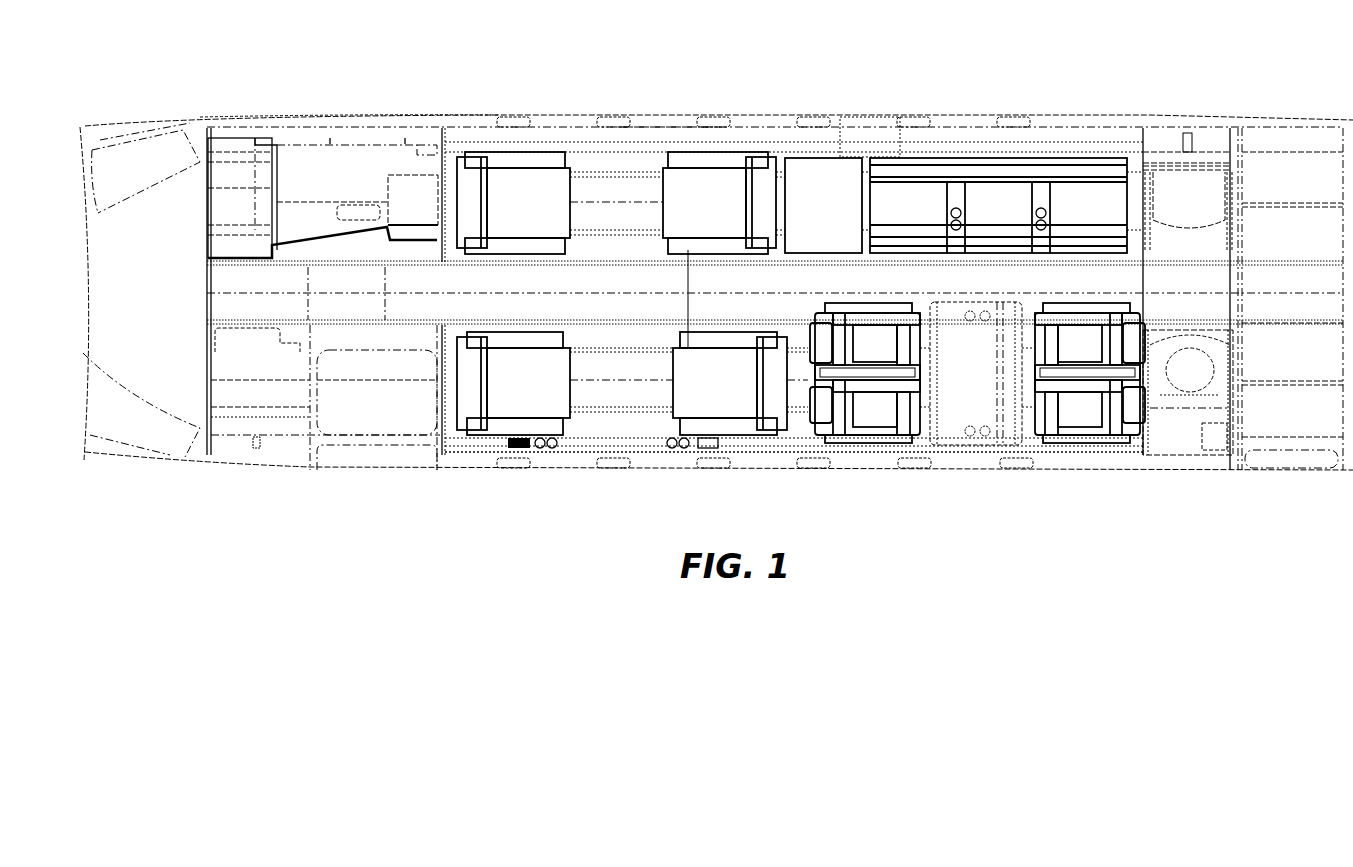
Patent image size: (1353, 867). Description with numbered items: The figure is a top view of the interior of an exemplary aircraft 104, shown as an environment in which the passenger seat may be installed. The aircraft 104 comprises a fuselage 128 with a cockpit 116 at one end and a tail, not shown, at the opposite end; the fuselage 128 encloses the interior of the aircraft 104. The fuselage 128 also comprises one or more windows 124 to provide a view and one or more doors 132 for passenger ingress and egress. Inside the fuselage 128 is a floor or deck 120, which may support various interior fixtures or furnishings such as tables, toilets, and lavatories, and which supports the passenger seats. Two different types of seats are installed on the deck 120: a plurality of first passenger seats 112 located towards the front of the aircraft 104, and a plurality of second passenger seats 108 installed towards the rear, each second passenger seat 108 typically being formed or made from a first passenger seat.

The aircraft 104 is at (677, 78).
The second passenger seat 108 is at (1102, 158).
The first passenger seat 112 is at (545, 150).
The cockpit 116 is at (129, 140).
The deck 120 is at (232, 298).
The window 124 is at (613, 112).
The fuselage 128 is at (260, 118).
The door 132 is at (840, 117).